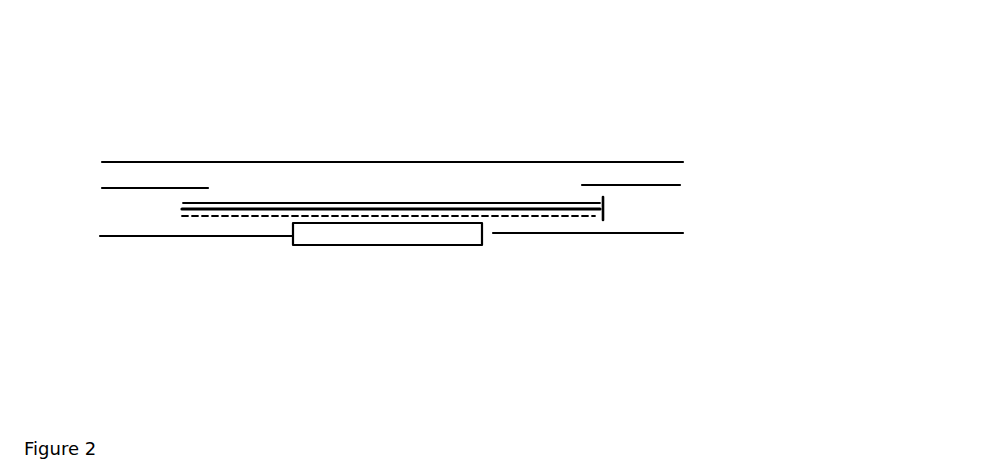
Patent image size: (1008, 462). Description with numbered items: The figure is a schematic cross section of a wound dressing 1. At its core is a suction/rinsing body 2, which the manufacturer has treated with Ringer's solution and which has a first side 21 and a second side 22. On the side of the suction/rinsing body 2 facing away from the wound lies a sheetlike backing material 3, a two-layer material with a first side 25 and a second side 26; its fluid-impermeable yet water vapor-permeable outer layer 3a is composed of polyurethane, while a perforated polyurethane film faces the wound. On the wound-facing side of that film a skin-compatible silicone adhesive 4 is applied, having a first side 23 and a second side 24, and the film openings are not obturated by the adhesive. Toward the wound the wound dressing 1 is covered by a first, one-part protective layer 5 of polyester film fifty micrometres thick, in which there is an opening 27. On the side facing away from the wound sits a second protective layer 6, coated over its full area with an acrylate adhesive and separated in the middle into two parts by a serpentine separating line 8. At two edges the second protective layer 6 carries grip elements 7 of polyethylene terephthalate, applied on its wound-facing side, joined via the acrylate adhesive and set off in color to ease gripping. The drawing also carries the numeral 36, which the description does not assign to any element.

The wound dressing 1 is at (615, 135).
The suction/rinsing body 2 is at (468, 238).
The sheetlike backing material 3 is at (605, 211).
The outer layer 3a is at (597, 204).
The adhesive layer 36 is at (568, 212).
The skin-compatible silicone adhesive 4 is at (205, 218).
The first protective layer 5 is at (147, 242).
The second protective layer 6 is at (681, 161).
The grip elements 7 is at (680, 185).
The serpentine separating line 8 is at (383, 162).
The first side of the suction/rinsing body 21 is at (345, 215).
The second side of the suction/rinsing body 22 is at (340, 248).
The first side of the silicone adhesive 23 is at (243, 212).
The second side of the silicone adhesive 24 is at (228, 217).
The first side of the backing material 25 is at (522, 200).
The second side of the backing material 26 is at (540, 218).
The opening of the first protective layer 27 is at (490, 243).